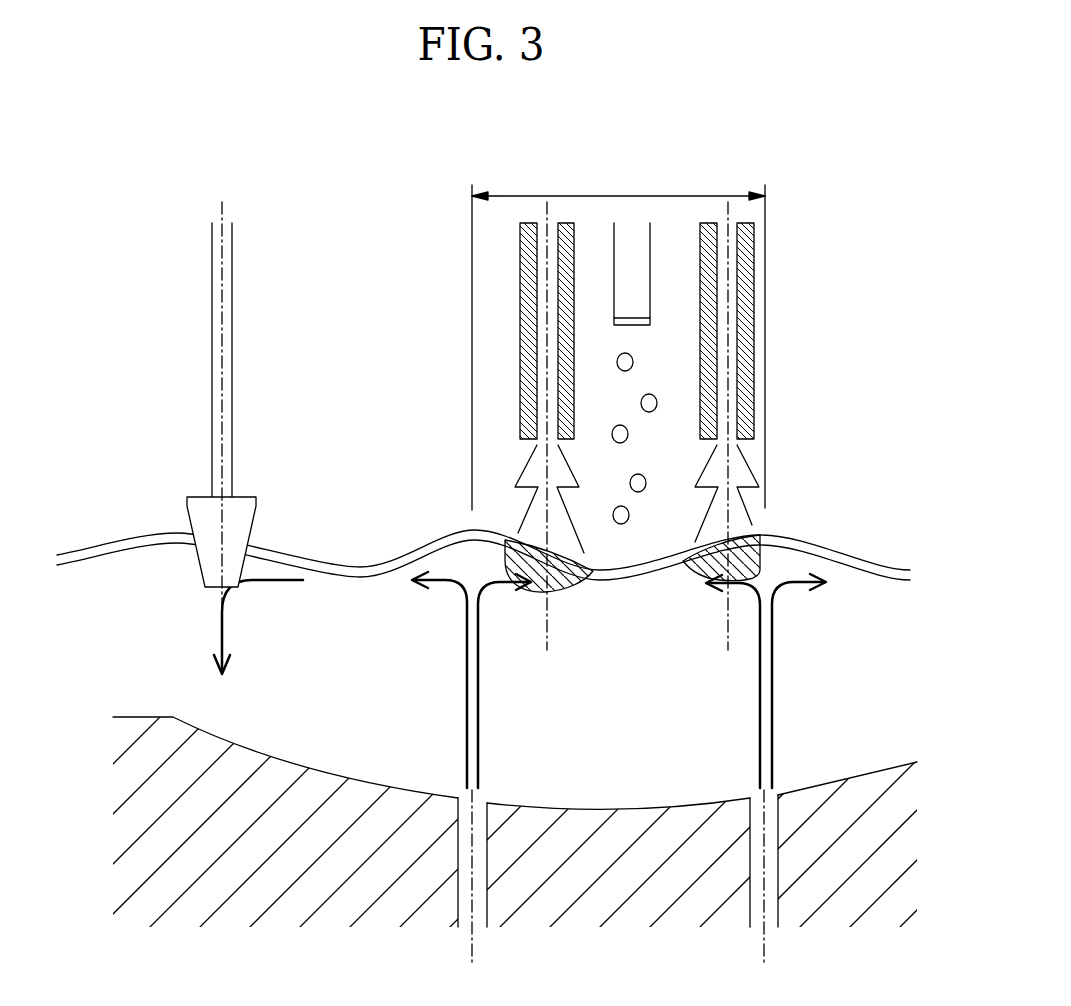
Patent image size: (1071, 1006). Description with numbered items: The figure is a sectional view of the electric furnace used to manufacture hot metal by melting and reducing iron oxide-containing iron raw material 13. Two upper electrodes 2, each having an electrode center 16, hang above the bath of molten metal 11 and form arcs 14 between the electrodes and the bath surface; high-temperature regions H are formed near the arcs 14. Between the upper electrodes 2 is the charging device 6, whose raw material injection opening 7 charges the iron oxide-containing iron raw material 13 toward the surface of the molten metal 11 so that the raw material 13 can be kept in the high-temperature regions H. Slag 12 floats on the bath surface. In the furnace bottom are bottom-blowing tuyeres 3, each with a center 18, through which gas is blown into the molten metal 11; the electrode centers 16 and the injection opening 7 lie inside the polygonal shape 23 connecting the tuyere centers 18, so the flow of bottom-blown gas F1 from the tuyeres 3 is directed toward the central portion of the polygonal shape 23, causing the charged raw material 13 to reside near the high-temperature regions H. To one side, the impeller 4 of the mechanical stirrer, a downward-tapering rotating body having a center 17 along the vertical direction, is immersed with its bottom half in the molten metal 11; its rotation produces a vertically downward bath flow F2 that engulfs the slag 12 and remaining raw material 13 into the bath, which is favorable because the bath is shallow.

The upper electrode 2 is at (520, 338).
The bottom-blowing tuyere 3 is at (460, 882).
The impeller 4 is at (193, 525).
The charging device 6 is at (614, 255).
The raw material injection opening 7 is at (641, 326).
The molten metal 11 is at (370, 680).
The slag 12 is at (365, 563).
The iron oxide-containing iron raw material 13 is at (627, 524).
The arc 14 is at (518, 510).
The electrode center 16 is at (545, 393).
The center of the impeller 17 is at (232, 525).
The center of the tuyere 18 is at (473, 843).
The polygonal shape 23 is at (680, 197).
The flow of bottom-blown gas F1 is at (493, 590).
The bath flow F2 is at (220, 635).
The high-temperature region H is at (577, 592).